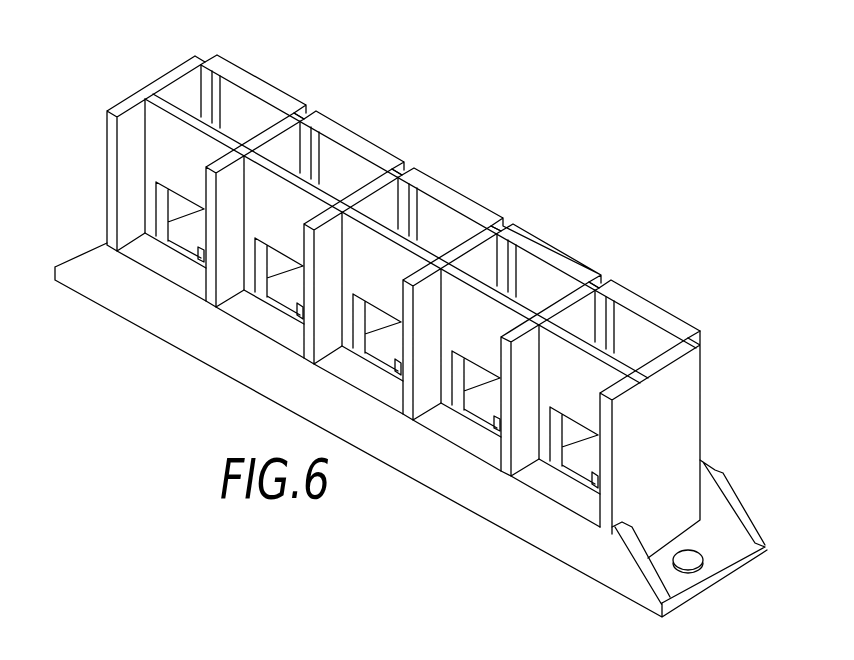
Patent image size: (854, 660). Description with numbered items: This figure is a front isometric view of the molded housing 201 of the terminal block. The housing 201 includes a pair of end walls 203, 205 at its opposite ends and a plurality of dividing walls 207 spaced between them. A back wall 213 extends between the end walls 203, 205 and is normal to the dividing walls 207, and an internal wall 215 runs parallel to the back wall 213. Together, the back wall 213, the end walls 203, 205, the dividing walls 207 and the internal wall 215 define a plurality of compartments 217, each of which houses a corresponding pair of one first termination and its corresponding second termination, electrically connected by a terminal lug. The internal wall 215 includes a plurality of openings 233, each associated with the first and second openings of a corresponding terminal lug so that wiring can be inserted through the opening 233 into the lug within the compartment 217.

The molded housing 201 is at (110, 359).
The end wall 203 is at (690, 385).
The end wall 205 is at (155, 83).
The dividing wall 207 is at (310, 330).
The back wall 213 is at (358, 132).
The internal wall 215 is at (365, 243).
The compartment 217 is at (250, 100).
The opening 233 is at (188, 197).